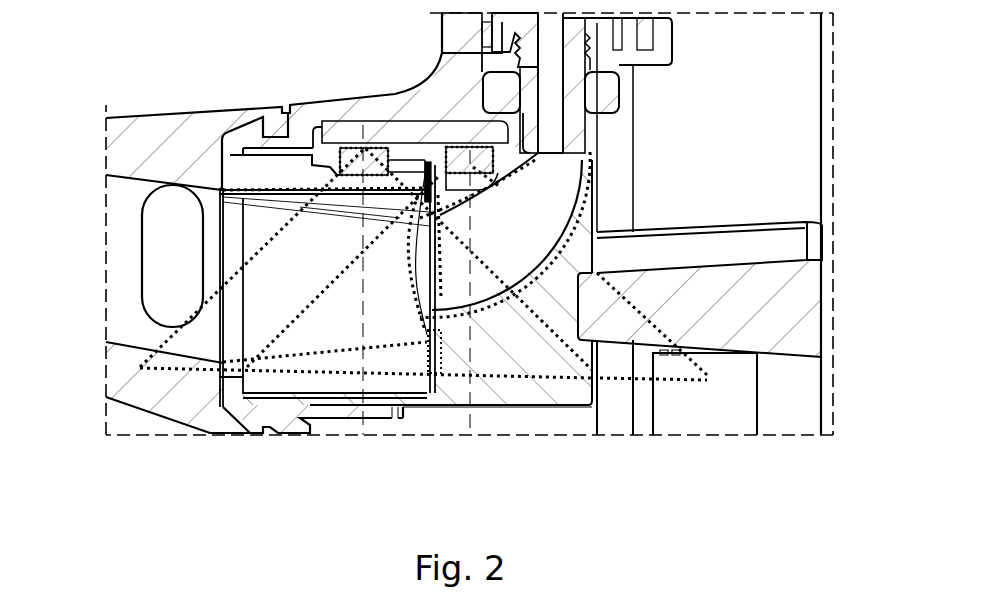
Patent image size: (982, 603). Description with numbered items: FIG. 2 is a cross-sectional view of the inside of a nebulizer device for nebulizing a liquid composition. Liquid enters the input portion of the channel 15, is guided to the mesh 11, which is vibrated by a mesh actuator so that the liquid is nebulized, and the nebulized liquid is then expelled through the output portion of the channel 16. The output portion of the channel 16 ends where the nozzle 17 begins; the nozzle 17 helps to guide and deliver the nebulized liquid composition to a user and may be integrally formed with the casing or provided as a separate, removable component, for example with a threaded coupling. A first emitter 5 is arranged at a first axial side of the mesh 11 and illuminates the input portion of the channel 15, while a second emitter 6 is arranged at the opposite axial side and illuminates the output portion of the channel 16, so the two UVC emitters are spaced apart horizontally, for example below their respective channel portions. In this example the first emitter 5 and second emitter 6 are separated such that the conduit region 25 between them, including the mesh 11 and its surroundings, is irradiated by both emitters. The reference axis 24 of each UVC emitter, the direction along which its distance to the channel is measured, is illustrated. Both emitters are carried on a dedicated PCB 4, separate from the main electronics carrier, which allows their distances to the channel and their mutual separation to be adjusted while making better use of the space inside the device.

The PCB 4 is at (398, 133).
The first emitter 5 is at (487, 147).
The second emitter 6 is at (382, 150).
The mesh 11 is at (441, 340).
The input portion of the channel 15 is at (552, 184).
The output portion of the channel 16 is at (247, 227).
The nozzle 17 is at (186, 137).
The reference axis 24 is at (358, 426).
The conduit region 25 is at (394, 427).